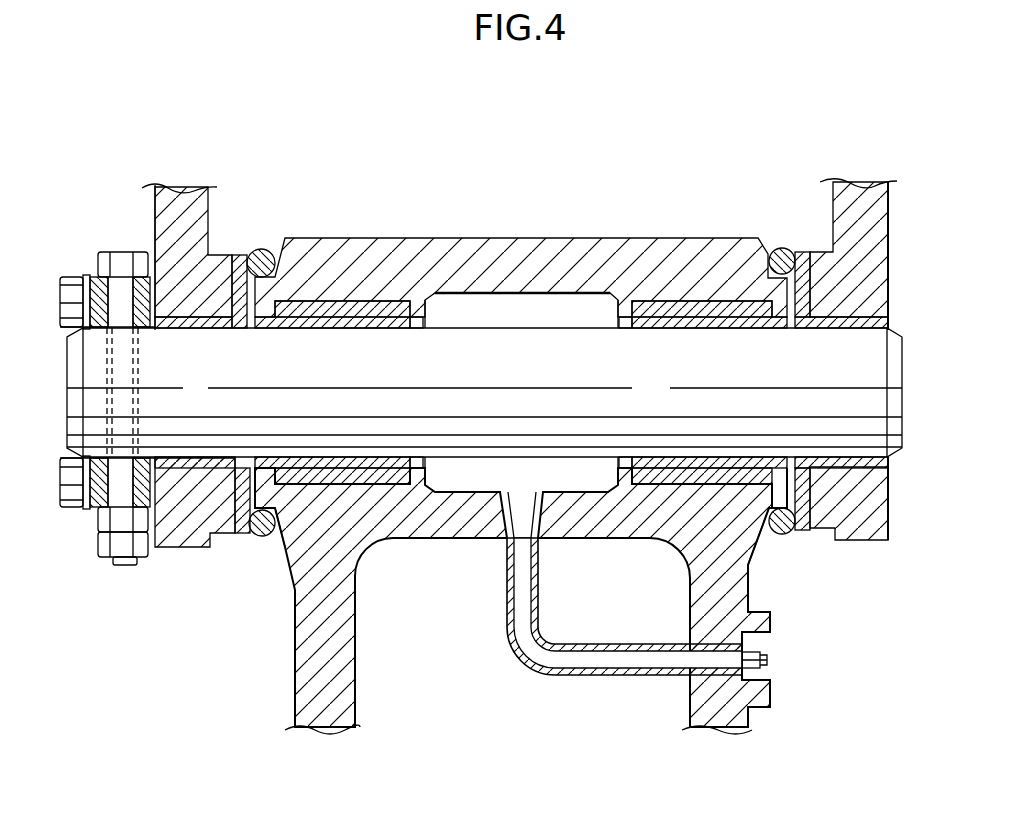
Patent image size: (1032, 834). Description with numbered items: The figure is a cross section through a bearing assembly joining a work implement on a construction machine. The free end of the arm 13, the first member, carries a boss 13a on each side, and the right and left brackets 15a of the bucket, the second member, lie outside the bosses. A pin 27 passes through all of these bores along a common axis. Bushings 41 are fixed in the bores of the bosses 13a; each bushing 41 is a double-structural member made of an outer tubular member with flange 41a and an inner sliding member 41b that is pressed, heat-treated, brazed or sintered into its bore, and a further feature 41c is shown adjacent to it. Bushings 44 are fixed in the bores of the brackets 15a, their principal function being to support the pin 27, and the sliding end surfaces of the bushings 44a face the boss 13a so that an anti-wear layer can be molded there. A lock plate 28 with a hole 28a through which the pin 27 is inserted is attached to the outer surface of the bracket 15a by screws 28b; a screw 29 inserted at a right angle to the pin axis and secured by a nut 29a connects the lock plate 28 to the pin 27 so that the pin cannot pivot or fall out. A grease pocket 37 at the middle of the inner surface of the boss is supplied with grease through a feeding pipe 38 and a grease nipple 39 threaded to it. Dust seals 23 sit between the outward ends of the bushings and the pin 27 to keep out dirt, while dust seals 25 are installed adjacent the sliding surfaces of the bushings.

The arm (first member) 13 is at (340, 680).
The boss 13a is at (555, 250).
The bracket 15a is at (168, 188).
The dust seal 23 is at (318, 300).
The dust seal 25 is at (262, 250).
The pin 27 is at (893, 375).
The lock plate 28 is at (83, 277).
The hole 28a is at (147, 330).
The screw 28b is at (75, 510).
The screw 29 is at (117, 252).
The nut 29a is at (140, 560).
The grease pocket 37 is at (495, 300).
The feeding pipe 38 is at (522, 665).
The grease nipple 39 is at (770, 660).
The bushing 41 is at (403, 305).
The outer tubular member with flange 41a is at (376, 320).
The inner sliding member 41b is at (423, 484).
The groove 41c is at (272, 498).
The bushing 44 is at (234, 258).
The bushing 44a is at (192, 470).